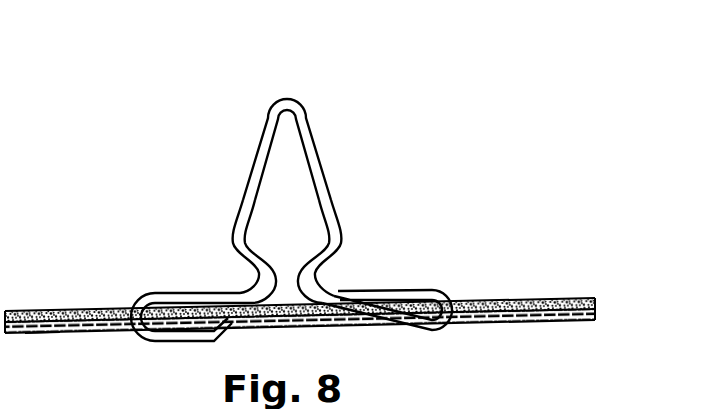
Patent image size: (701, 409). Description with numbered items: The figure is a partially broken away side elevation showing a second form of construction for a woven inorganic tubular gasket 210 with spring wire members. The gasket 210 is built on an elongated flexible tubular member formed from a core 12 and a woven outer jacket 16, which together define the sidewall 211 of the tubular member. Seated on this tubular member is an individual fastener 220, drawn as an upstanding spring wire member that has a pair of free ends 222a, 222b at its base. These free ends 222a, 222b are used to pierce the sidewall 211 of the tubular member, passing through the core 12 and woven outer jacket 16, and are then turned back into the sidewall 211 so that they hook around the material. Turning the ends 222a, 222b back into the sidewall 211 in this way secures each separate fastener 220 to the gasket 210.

The core 12 is at (530, 296).
The woven outer jacket 16 is at (549, 332).
The gasket 210 is at (137, 153).
The sidewall 211 is at (42, 328).
The fastener 220 is at (330, 173).
The free end 222a is at (243, 296).
The free end 222b is at (345, 298).